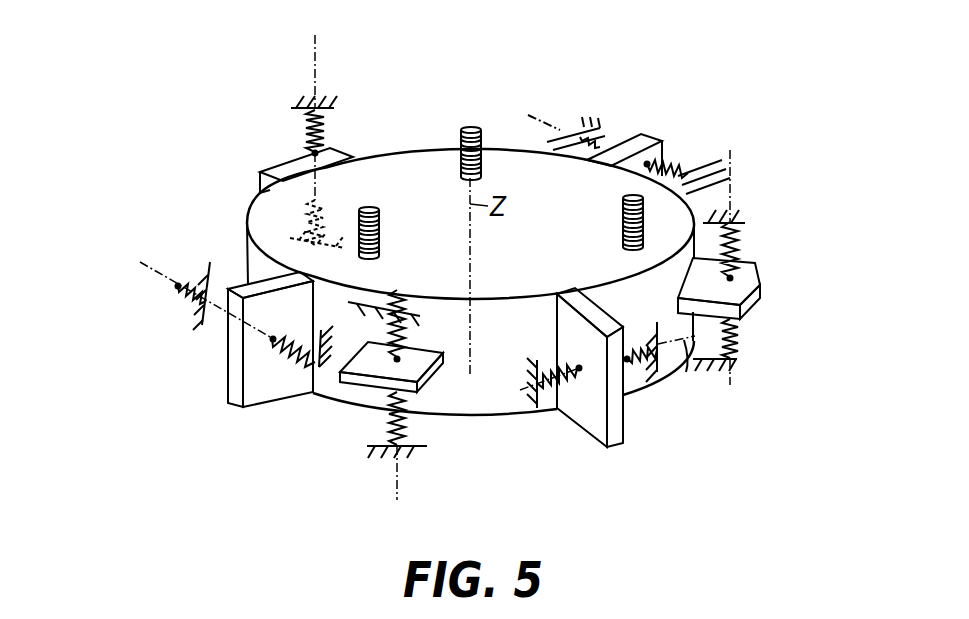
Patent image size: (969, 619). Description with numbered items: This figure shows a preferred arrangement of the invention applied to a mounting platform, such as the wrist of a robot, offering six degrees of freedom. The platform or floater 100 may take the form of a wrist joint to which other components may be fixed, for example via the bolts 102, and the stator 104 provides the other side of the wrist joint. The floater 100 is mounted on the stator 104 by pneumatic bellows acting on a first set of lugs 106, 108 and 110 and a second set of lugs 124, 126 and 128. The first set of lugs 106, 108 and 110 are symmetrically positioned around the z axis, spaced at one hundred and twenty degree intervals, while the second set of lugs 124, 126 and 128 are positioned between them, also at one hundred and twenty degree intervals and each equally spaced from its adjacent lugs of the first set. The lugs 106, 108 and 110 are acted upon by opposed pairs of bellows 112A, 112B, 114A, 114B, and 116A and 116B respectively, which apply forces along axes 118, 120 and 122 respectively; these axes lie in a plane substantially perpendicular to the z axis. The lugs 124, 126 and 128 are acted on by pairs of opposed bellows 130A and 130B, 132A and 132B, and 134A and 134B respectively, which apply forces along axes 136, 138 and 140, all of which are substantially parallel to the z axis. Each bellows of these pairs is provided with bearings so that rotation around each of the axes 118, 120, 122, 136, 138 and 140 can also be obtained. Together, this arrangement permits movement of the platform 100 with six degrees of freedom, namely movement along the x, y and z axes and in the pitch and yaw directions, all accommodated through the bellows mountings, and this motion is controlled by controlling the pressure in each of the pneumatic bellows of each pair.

The platform or floater 100 is at (238, 208).
The bolts 102 is at (468, 128).
The stator 104 is at (333, 108).
The lug 106 is at (245, 287).
The lug 108 is at (593, 447).
The lug 110 is at (660, 140).
The bellows 112A is at (213, 335).
The bellows 112B is at (300, 360).
The bellows 114A is at (573, 412).
The bellows 114B is at (640, 362).
The bellows 116A is at (690, 165).
The bellows 116B is at (600, 140).
The axis 118 is at (185, 287).
The axis 120 is at (684, 340).
The axis 122 is at (556, 88).
The lug 124 is at (360, 395).
The lug 126 is at (764, 281).
The lug 128 is at (258, 172).
The bellows 130A is at (400, 340).
The bellows 130B is at (403, 430).
The bellows 132A is at (740, 246).
The bellows 132B is at (740, 328).
The bellows 134A is at (303, 116).
The bellows 134B is at (322, 197).
The axis 136 is at (394, 482).
The axis 138 is at (730, 172).
The axis 140 is at (317, 78).